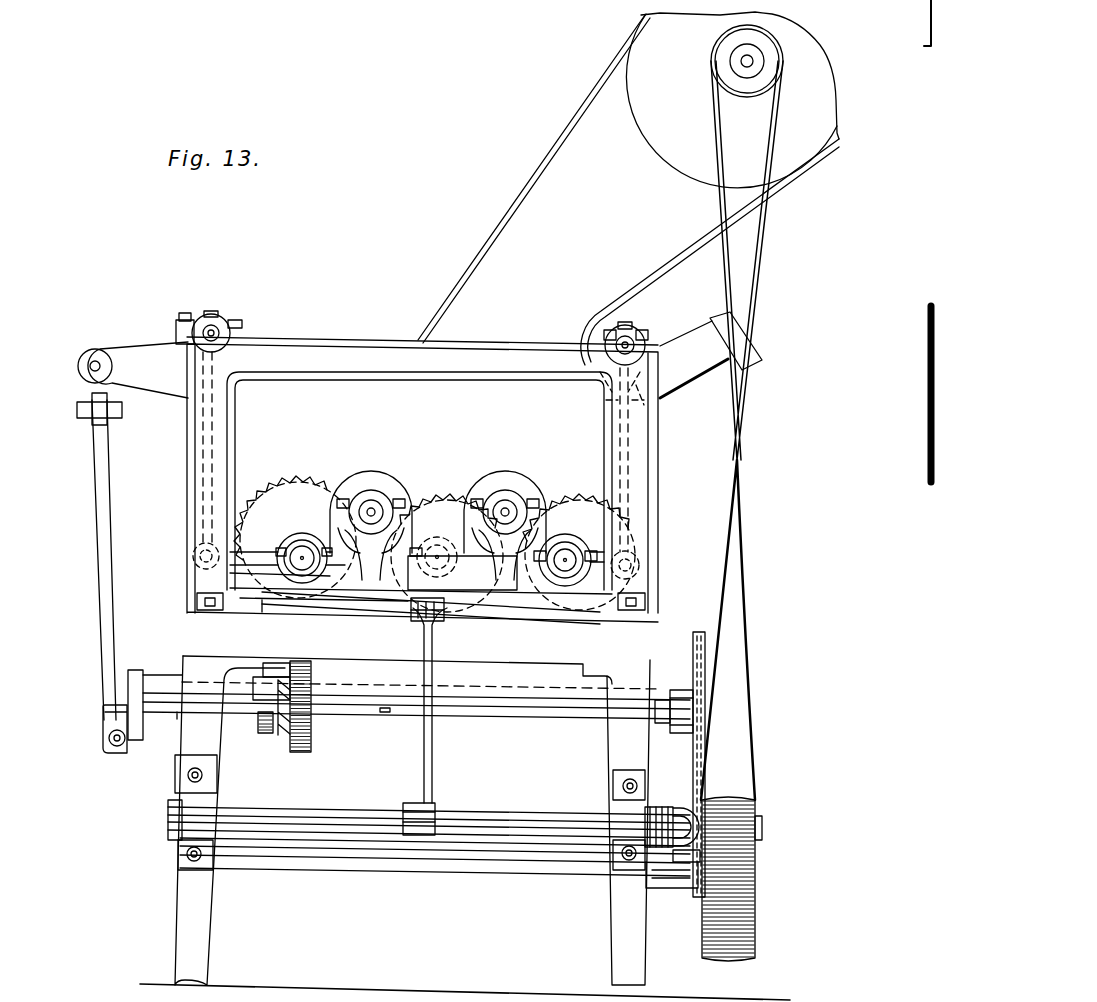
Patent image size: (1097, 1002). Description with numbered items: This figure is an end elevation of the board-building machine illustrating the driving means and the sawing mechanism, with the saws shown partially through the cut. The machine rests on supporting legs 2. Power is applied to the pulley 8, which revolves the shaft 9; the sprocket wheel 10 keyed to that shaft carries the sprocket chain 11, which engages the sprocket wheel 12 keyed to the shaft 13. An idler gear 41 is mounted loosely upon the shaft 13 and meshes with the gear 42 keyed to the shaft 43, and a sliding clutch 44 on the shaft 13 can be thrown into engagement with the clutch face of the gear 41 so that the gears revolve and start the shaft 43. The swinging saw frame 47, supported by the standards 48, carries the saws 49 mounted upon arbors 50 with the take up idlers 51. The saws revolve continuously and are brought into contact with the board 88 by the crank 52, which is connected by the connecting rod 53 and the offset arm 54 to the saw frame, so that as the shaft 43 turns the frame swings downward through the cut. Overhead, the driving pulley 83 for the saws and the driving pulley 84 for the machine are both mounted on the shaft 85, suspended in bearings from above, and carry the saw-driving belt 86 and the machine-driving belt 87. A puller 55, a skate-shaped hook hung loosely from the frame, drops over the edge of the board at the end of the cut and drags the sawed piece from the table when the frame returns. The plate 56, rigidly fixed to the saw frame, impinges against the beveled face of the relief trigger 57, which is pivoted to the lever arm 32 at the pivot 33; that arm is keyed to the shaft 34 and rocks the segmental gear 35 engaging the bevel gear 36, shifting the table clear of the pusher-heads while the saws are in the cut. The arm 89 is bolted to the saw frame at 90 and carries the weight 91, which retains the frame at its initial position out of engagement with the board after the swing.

The supporting legs 2 is at (190, 744).
The pulley 8 is at (735, 806).
The shaft 9 is at (762, 830).
The sprocket wheel 10 is at (690, 890).
The sprocket chain 11 is at (698, 800).
The sprocket wheel 12 is at (694, 635).
The shaft 13 is at (660, 690).
The lever arm 32 is at (433, 750).
The pivot 33 is at (413, 618).
The shaft 34 is at (490, 816).
The segmental gear 35 is at (655, 800).
The bevel gear 36 is at (670, 813).
The idler gear 41 is at (302, 755).
The gear 42 is at (312, 735).
The shaft 43 is at (388, 712).
The sliding clutch 44 is at (275, 690).
The swinging saw frame 47 is at (246, 333).
The standards 48 is at (188, 494).
The saws 49 is at (290, 510).
The arbors 50 is at (305, 582).
The take up idlers 51 is at (380, 484).
The crank 52 is at (134, 716).
The connecting rod 53 is at (105, 608).
The offset arm 54 is at (152, 380).
The puller 55 is at (528, 612).
The plate 56 is at (517, 575).
The relief trigger 57 is at (358, 582).
The driving pulley for the saws 83 is at (640, 86).
The driving pulley for the machine 84 is at (772, 62).
The shaft 85 is at (740, 62).
The saw-driving belt 86 is at (487, 250).
The machine-driving belt 87 is at (765, 302).
The board 88 is at (270, 600).
The arm 89 is at (690, 378).
The bolted connection 90 is at (640, 410).
The weight 91 is at (710, 322).